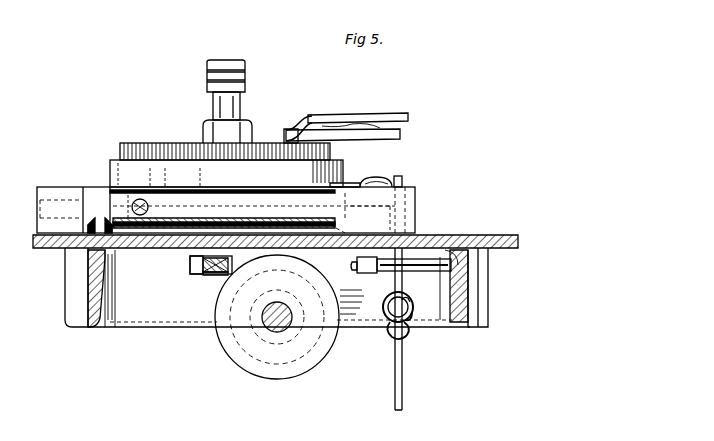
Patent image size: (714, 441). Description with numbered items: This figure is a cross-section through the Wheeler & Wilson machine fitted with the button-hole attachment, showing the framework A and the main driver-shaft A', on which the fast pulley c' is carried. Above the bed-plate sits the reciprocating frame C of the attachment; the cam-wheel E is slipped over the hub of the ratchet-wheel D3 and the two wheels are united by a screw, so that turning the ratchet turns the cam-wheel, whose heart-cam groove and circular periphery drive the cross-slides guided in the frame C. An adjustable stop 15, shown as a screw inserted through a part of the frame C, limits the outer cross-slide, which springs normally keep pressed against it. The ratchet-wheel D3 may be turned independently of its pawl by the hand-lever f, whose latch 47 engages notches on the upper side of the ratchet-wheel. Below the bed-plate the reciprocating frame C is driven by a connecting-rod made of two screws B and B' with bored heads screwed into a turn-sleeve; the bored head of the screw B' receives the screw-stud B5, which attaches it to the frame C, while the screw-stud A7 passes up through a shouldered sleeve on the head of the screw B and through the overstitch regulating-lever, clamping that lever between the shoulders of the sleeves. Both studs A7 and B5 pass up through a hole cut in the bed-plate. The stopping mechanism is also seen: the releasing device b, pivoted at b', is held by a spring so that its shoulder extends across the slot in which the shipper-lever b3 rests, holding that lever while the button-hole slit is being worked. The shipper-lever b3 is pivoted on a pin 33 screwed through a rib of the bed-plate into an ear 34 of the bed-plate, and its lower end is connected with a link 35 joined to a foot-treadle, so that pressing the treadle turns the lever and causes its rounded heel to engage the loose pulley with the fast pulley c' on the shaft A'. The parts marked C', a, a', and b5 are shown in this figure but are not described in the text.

The ratchet-wheel D3 is at (120, 156).
The cam-wheel E is at (110, 178).
The hand-lever f is at (356, 114).
The latch 47 is at (288, 130).
The reciprocating frame C is at (226, 210).
The frame extension C' is at (41, 211).
The adjustable stop 15 is at (131, 207).
The fast pulley c' is at (398, 210).
The releasing device b is at (348, 172).
The pivot b' is at (380, 170).
The shipper-lever b3 is at (410, 175).
The framework A is at (273, 253).
The screw-stud A7 is at (190, 276).
The screw B is at (196, 264).
The screw B' is at (184, 284).
The screw-stud B5 is at (215, 277).
The main driver-shaft A' is at (269, 325).
The ear 34 is at (367, 277).
The pin 33 is at (448, 238).
The link 35 is at (413, 329).
The ring a is at (410, 307).
The hook a' is at (386, 332).
The link b5 is at (404, 298).